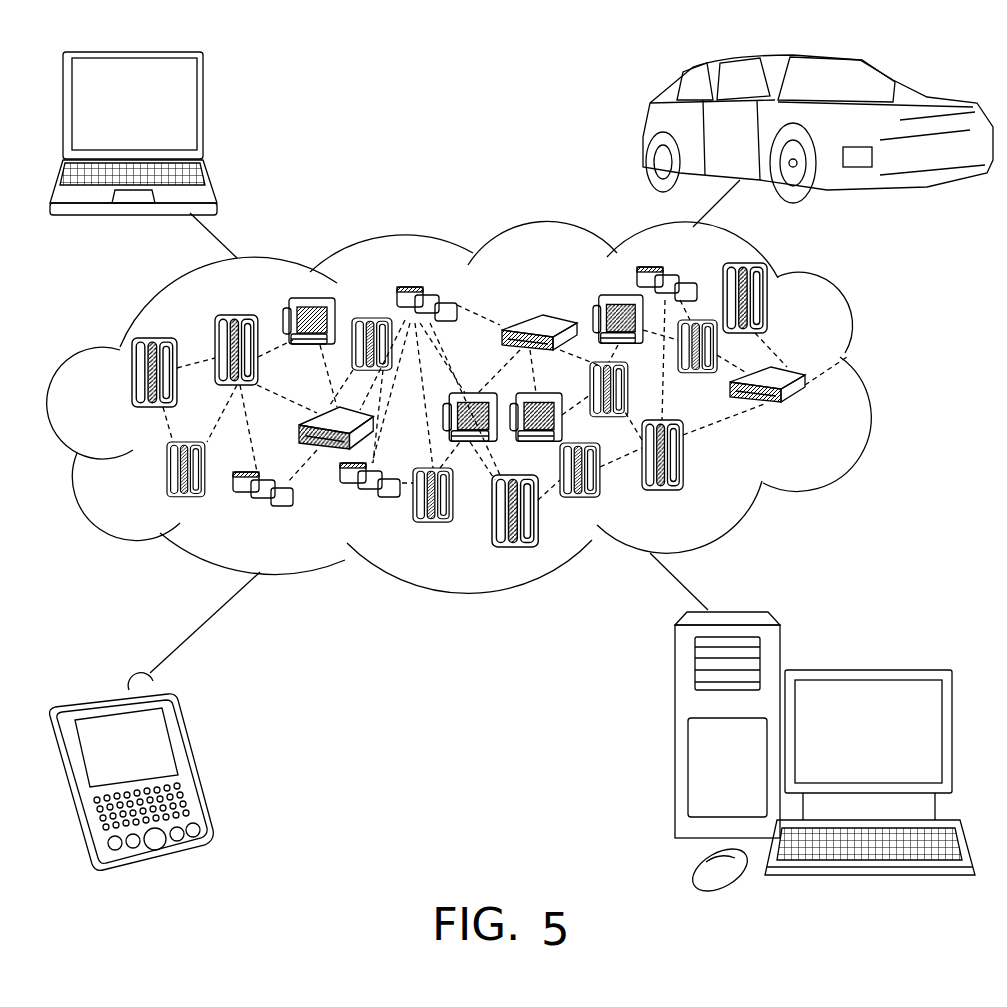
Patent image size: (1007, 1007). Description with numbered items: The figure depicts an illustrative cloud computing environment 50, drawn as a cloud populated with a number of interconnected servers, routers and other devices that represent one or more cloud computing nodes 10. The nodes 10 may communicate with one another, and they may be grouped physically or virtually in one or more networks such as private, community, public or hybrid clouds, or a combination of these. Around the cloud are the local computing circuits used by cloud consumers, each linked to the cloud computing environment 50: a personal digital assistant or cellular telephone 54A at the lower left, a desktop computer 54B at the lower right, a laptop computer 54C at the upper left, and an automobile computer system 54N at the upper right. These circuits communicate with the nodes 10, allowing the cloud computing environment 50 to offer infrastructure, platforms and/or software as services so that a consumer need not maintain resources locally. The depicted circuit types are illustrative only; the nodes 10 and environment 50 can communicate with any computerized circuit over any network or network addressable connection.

The cloud computing node 10 is at (818, 420).
The cloud computing environment 50 is at (484, 407).
The personal digital assistant or cellular telephone 54A is at (192, 763).
The desktop computer 54B is at (867, 668).
The laptop computer 54C is at (203, 113).
The automobile computer system 54N is at (643, 130).